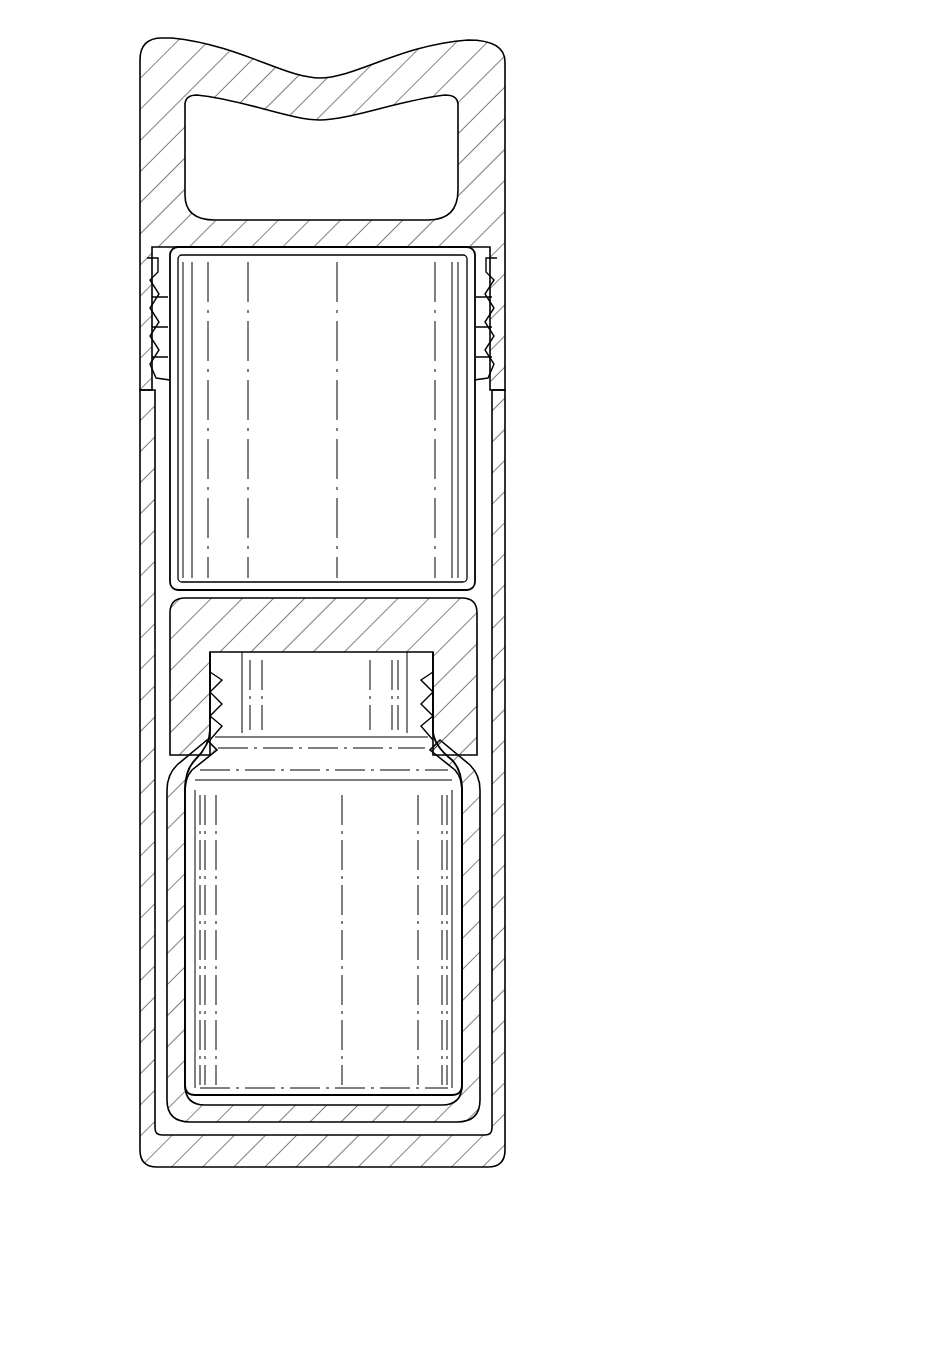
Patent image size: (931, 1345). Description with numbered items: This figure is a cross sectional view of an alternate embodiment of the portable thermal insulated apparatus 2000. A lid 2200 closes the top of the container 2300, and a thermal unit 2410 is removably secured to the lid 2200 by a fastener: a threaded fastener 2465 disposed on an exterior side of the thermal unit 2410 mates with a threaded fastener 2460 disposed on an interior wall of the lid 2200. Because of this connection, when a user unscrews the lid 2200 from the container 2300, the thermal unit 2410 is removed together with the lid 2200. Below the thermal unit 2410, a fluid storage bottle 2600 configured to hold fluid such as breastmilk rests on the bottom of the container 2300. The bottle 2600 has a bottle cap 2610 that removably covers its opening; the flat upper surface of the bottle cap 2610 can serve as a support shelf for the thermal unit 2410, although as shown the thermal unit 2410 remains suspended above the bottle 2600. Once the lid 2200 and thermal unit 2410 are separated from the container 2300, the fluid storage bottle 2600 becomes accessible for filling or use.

The portable thermal insulated apparatus 2000 is at (612, 140).
The lid 2200 is at (156, 135).
The container 2300 is at (505, 755).
The thermal unit 2410 is at (452, 517).
The mating threaded fastener 2460 is at (162, 327).
The threaded fastener 2465 is at (490, 318).
The fluid storage bottle 2600 is at (465, 928).
The bottle cap 2610 is at (185, 672).